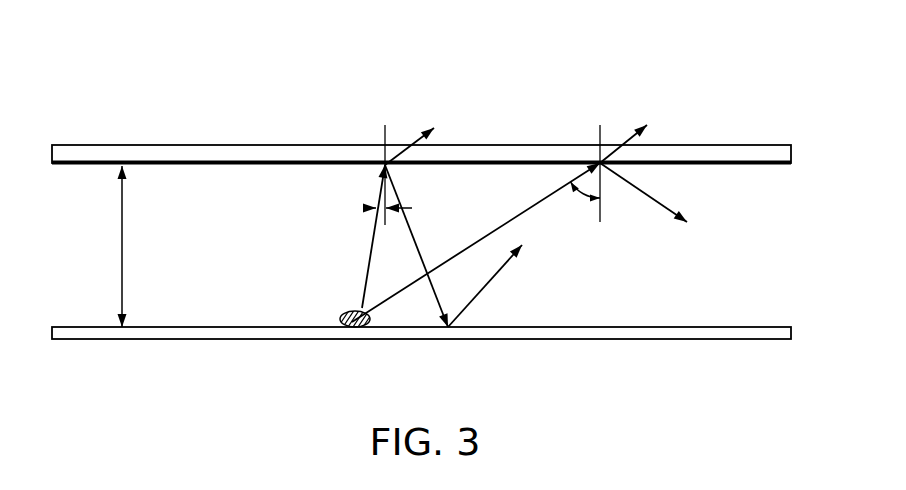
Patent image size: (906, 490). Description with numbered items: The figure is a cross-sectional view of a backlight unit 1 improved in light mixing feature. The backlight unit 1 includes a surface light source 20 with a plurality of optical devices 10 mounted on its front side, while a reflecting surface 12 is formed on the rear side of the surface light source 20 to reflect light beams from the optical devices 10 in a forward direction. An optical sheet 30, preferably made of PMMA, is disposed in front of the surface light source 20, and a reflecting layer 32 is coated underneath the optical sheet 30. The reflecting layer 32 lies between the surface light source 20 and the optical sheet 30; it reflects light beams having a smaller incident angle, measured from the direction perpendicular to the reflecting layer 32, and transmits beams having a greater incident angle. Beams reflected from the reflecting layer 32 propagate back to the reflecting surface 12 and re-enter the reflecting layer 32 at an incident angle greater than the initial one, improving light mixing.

The backlight unit 1 is at (708, 93).
The optical sheet 30 is at (755, 146).
The reflecting layer 32 is at (775, 164).
The surface light source 20 is at (770, 295).
The reflecting surface 12 is at (642, 333).
The optical device 10 is at (352, 328).